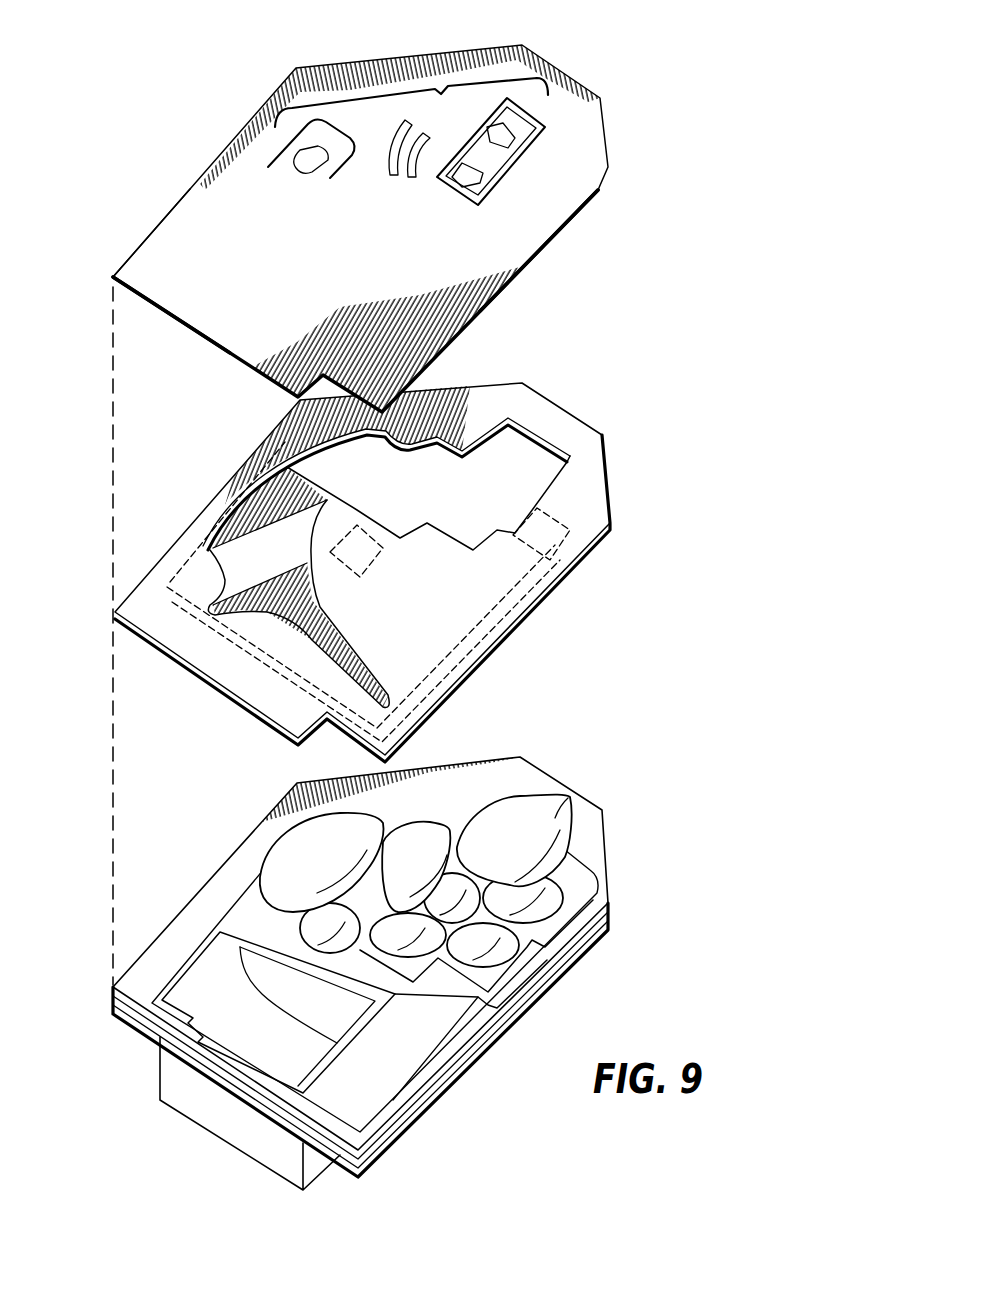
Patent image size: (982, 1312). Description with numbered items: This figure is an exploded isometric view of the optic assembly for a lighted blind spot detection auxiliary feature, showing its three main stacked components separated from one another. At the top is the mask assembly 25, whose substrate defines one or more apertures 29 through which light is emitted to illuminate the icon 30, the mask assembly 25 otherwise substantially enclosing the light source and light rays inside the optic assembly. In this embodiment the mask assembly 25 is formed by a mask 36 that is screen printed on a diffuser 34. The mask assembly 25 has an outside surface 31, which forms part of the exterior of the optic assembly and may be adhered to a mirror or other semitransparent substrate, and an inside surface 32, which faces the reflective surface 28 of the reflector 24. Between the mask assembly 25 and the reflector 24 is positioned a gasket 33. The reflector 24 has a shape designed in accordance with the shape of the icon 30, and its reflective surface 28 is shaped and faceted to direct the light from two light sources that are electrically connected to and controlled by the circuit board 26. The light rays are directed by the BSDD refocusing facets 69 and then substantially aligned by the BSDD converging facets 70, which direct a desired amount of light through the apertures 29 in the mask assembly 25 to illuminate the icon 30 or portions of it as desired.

The reflector 24 is at (272, 1140).
The mask assembly 25 is at (350, 223).
The circuit board 26 is at (285, 545).
The reflective surface 28 is at (537, 830).
The apertures 29 is at (543, 128).
The icon 30 is at (443, 90).
The outside surface 31 is at (268, 322).
The inside surface 32 is at (222, 356).
The gasket 33 is at (580, 423).
The diffuser 34 is at (555, 247).
The mask 36 is at (153, 263).
The BSDD refocusing facets 69 is at (300, 935).
The BSDD converging facets 70 is at (285, 857).